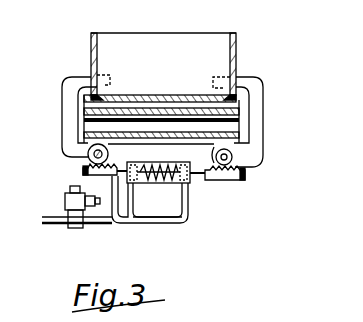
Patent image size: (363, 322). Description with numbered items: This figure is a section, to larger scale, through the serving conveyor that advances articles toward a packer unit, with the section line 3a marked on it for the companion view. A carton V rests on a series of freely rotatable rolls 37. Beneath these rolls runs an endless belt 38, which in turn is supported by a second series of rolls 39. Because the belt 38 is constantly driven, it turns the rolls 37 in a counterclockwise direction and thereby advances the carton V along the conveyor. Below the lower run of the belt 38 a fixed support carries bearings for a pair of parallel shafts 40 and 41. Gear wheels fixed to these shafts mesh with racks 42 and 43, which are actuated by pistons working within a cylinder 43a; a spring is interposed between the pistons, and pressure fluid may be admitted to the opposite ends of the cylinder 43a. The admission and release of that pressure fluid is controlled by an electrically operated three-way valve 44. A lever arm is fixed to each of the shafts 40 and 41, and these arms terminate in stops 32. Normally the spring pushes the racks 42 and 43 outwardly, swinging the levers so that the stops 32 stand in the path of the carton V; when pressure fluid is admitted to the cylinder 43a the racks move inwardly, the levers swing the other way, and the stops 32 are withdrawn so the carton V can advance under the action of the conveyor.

The section line 3a is at (164, 12).
The carton V is at (237, 44).
The stops 32 is at (73, 66).
The freely rotatable rolls 37 is at (252, 102).
The endless belt 38 is at (249, 112).
The second series of rolls 39 is at (251, 128).
The shaft 40 is at (82, 169).
The shaft 41 is at (238, 166).
The rack 42 is at (113, 174).
The rack 43 is at (229, 181).
The cylinder 43a is at (163, 186).
The three-way valve 44 is at (65, 200).